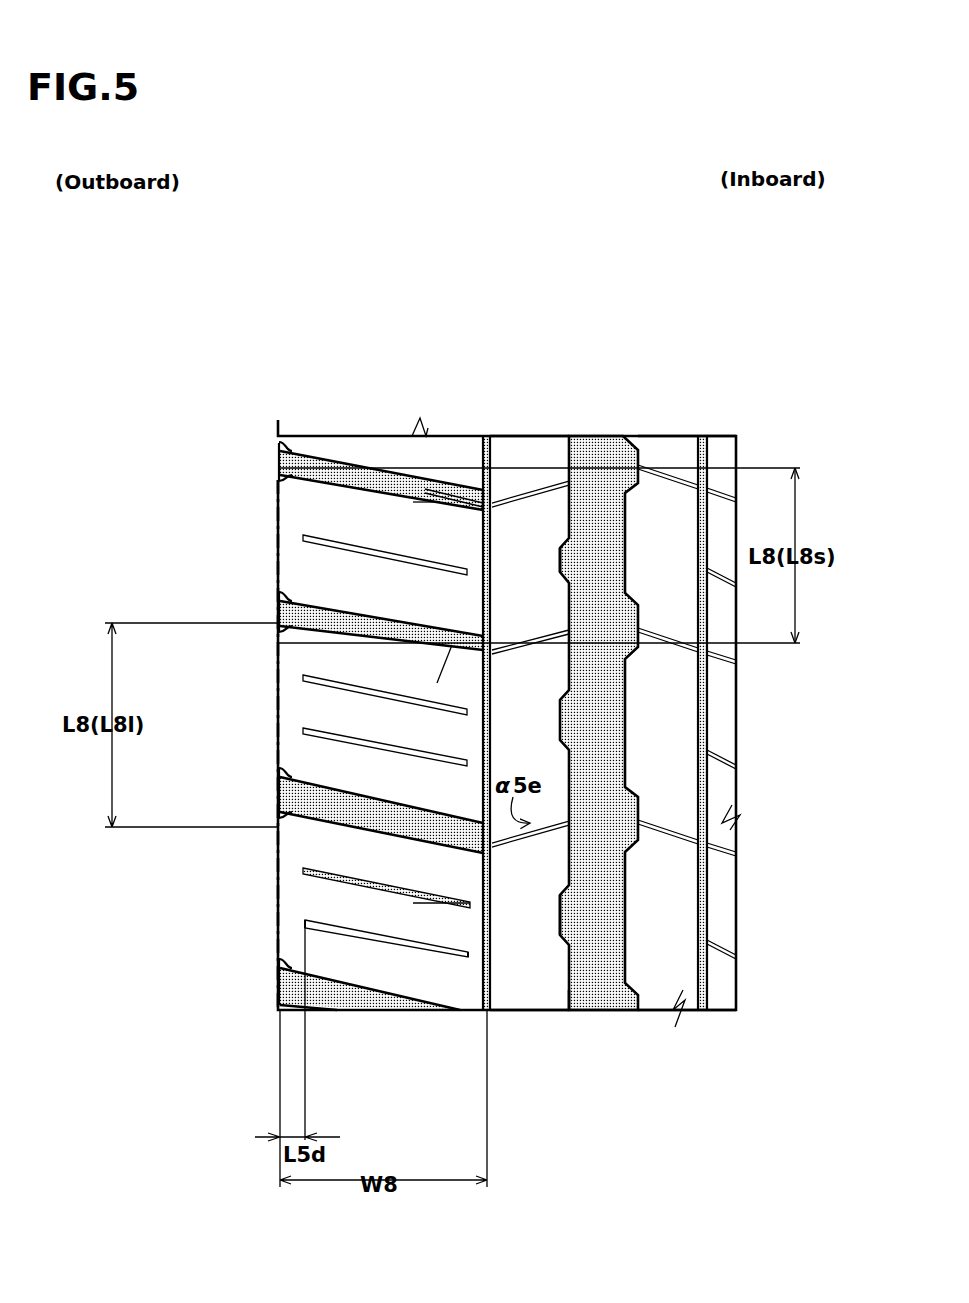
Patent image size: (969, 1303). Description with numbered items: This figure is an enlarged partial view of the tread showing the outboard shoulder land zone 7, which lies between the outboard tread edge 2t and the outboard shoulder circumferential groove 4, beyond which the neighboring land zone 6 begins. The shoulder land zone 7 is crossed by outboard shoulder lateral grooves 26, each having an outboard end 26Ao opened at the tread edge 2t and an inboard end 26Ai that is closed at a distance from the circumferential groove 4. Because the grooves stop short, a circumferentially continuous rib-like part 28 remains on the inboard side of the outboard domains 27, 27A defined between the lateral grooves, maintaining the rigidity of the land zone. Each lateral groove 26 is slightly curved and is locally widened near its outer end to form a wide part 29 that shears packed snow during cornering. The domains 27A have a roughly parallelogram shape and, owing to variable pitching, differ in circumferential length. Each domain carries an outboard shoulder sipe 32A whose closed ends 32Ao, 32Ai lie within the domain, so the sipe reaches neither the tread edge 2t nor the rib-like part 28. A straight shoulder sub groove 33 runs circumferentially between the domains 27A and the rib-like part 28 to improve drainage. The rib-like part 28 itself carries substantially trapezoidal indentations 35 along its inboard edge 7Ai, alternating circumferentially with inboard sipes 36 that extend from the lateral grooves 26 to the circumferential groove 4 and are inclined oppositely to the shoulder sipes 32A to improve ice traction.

The shoulder land zone 7 is at (555, 279).
The outboard domain 27 is at (352, 520).
The rib-like part 28 is at (545, 462).
The outboard shoulder lateral groove 26 is at (330, 462).
The outboard end of outboard shoulder lateral groove 26Ao is at (278, 465).
The inboard end of outboard shoulder lateral groove 26Ai is at (490, 497).
The shoulder sub groove 33 is at (484, 438).
The outboard domain 27A is at (338, 568).
The wide part 29 is at (278, 612).
The outboard shoulder sipe 32A is at (337, 878).
The outboard end of outboard shoulder sipe 32Ao is at (305, 922).
The inboard end of outboard shoulder sipe 32Ai is at (468, 955).
The inboard sipe 36 is at (493, 655).
The shoulder circumferential groove 4 is at (603, 967).
The indentation 35 is at (563, 560).
The land zone 6 is at (668, 462).
The inboard edge of outboard shoulder land zone 7Ai is at (580, 988).
The outboard tread edge 2t is at (278, 513).